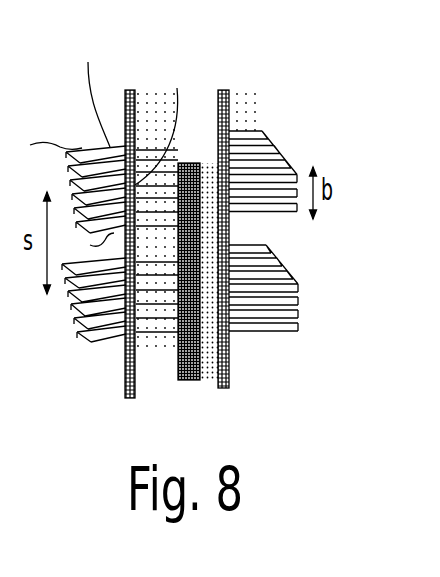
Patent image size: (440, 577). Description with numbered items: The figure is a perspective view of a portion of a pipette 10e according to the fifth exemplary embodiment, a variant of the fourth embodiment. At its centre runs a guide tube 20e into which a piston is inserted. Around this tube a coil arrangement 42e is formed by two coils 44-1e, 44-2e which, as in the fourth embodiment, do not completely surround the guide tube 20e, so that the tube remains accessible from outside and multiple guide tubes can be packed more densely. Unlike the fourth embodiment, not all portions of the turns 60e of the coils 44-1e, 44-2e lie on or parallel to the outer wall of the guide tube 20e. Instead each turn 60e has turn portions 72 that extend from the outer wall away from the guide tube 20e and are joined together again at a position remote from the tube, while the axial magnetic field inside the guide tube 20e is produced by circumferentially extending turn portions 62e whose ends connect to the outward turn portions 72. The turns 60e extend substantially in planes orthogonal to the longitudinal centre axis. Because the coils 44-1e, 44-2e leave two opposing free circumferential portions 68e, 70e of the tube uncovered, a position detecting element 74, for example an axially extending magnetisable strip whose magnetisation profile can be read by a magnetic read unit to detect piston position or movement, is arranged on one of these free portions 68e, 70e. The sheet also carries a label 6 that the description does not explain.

The pipette 10e is at (295, 78).
The guide tube 20e is at (130, 90).
The turns 60e is at (90, 86).
The circumferentially extending turn portions 62e is at (165, 118).
The coil 44-1e is at (82, 148).
The coil 44-2e is at (258, 128).
The turn portions 72 is at (58, 195).
The coil arrangement 42e is at (305, 323).
The free circumferential portion 68e is at (200, 327).
The free circumferential portion 70e is at (125, 348).
The position detecting element 74 is at (187, 380).
The channel 6 is at (238, 44).